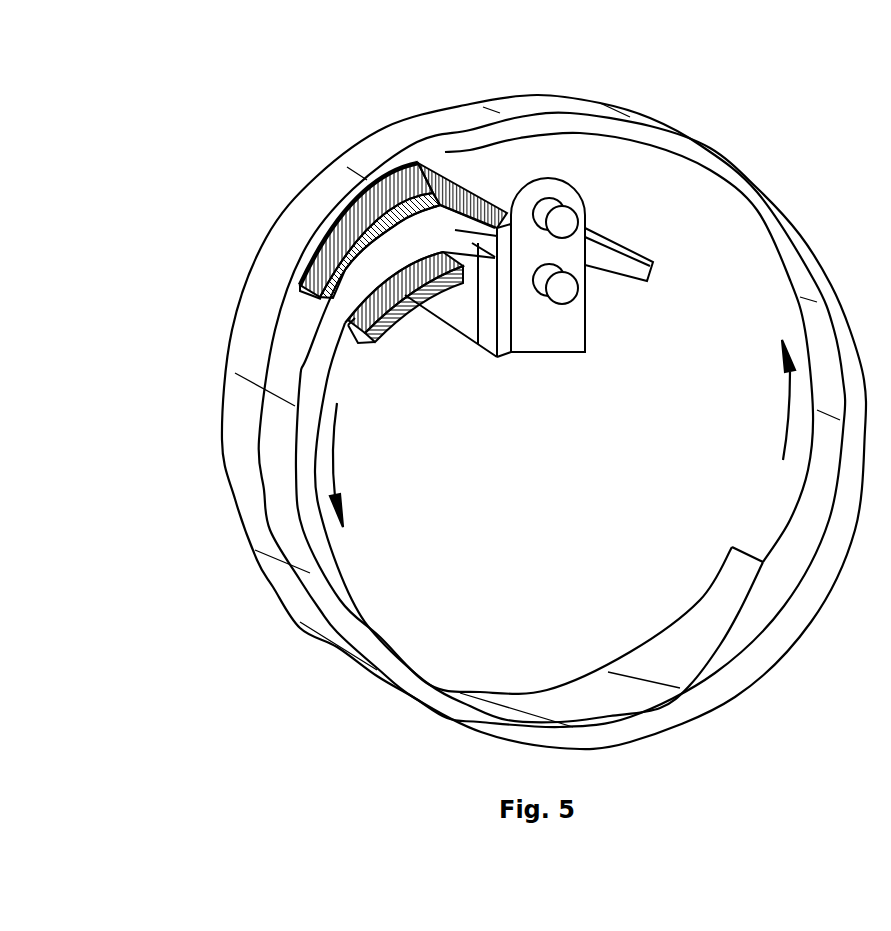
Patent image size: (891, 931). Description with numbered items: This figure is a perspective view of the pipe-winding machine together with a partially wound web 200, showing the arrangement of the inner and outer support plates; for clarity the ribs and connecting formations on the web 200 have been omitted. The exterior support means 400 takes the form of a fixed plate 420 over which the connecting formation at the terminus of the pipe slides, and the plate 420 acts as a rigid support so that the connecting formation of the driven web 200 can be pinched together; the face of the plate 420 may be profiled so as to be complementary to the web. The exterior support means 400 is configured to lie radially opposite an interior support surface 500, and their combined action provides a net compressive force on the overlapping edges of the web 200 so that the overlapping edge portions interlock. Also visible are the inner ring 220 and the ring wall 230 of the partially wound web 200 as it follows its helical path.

The web 200 is at (765, 602).
The inner split ring 220 is at (790, 548).
The ring wall 230 is at (253, 355).
The exterior support means 400 is at (355, 188).
The fixed plate 420 is at (403, 210).
The interior support surface 500 is at (375, 312).